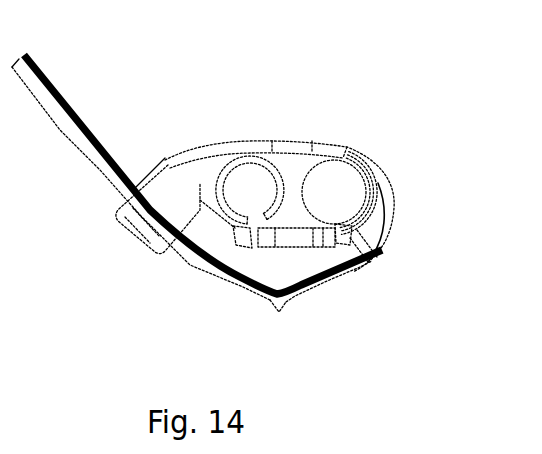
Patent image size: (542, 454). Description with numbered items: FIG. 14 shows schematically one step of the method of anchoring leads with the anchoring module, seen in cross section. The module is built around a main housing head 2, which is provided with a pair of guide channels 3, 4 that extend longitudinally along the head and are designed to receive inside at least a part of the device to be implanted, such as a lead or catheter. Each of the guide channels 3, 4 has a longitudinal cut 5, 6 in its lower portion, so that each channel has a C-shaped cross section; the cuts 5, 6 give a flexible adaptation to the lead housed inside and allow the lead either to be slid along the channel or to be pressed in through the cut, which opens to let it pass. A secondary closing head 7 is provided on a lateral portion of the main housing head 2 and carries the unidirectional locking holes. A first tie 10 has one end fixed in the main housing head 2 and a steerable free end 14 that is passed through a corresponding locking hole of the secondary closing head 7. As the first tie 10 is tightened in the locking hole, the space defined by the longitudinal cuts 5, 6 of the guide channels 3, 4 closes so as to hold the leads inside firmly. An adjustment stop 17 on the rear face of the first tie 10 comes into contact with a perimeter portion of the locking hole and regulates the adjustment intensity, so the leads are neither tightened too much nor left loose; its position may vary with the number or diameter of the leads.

The free end 14 is at (51, 76).
The main housing head 2 is at (288, 142).
The secondary closing head 7 is at (180, 175).
The guide channel 4 is at (247, 198).
The guide channel 3 is at (327, 188).
The first tie 10 is at (381, 263).
The longitudinal cut 6 is at (250, 241).
The longitudinal cut 5 is at (328, 232).
The adjustment stop 17 is at (285, 304).